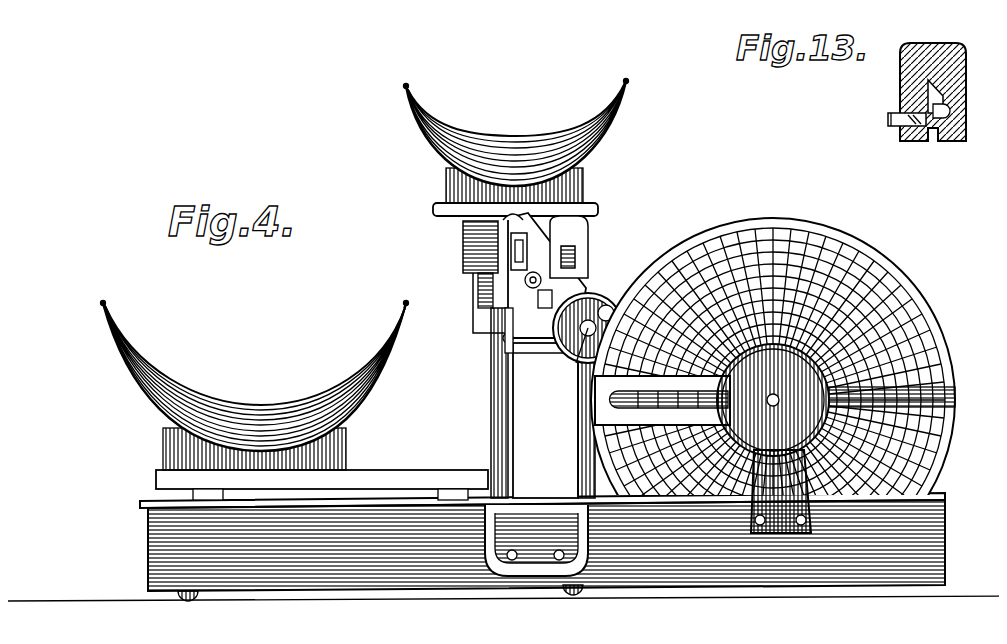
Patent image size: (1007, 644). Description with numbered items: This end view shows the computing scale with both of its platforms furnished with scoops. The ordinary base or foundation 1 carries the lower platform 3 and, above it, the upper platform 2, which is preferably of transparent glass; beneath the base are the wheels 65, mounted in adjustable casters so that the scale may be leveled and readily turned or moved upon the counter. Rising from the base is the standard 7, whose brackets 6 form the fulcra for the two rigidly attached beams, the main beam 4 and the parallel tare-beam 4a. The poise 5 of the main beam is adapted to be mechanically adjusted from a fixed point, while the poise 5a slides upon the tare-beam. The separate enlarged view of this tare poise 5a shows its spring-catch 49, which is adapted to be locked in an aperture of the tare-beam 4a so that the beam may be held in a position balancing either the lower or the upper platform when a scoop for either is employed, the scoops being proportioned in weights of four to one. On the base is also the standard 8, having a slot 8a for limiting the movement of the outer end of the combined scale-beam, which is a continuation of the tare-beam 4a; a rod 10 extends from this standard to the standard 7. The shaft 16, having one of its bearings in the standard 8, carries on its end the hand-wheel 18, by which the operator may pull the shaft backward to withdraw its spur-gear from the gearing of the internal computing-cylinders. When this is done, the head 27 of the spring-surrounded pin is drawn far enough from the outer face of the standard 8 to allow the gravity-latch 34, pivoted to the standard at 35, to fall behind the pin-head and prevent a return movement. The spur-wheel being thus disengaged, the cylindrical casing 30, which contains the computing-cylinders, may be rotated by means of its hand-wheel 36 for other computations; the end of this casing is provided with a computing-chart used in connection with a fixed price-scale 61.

In FIG. 4, the base 1 is at (425, 578).
In FIG. 4, the upper platform 2 is at (585, 196).
In FIG. 4, the lower platform 3 is at (375, 462).
In FIG. 4, the main beam 4 is at (567, 250).
In FIG. 4, the tare-beam 4a is at (572, 236).
In FIG. 4, the poise of the main beam 5 is at (500, 252).
In FIG. 13, the poise of the main beam 5 is at (920, 92).
In FIG. 13, the poise of the tare-beam 5a is at (958, 70).
In FIG. 4, the brackets 6 is at (455, 228).
In FIG. 4, the standard 7 is at (483, 356).
In FIG. 4, the standard 8 is at (545, 420).
In FIG. 4, the slot 8a is at (520, 235).
In FIG. 4, the rod 10 is at (517, 273).
In FIG. 4, the shaft 16 is at (572, 348).
In FIG. 4, the hand-wheel 18 is at (600, 295).
In FIG. 4, the head 27 is at (497, 338).
In FIG. 4, the cylindrical casing 30 is at (880, 258).
In FIG. 4, the gravity-latch 34 is at (495, 330).
In FIG. 4, the pivot 35 is at (478, 310).
In FIG. 4, the hand-wheel 36 is at (900, 428).
In FIG. 13, the spring-catch 49 is at (935, 133).
In FIG. 4, the fixed price-scale 61 is at (590, 413).
In FIG. 4, the wheels 65 is at (178, 592).